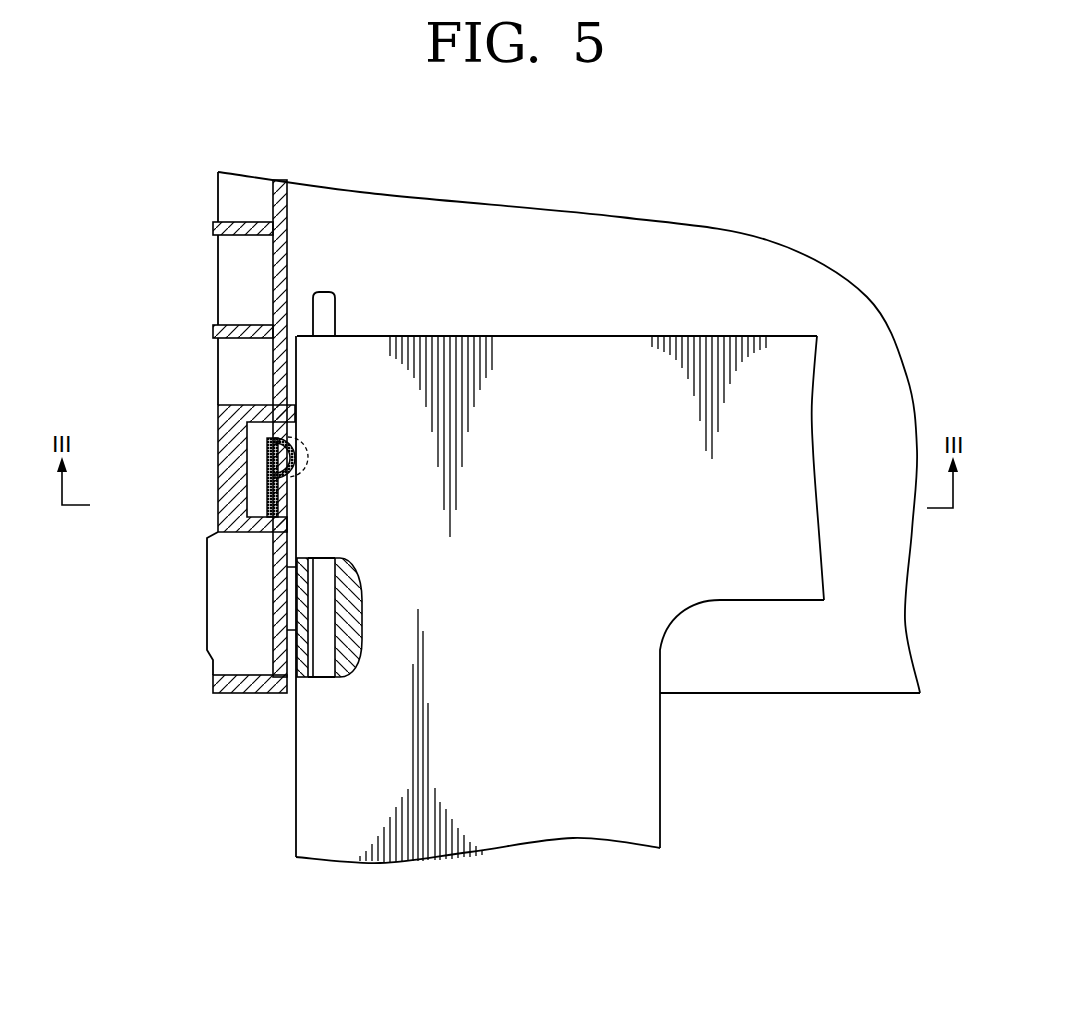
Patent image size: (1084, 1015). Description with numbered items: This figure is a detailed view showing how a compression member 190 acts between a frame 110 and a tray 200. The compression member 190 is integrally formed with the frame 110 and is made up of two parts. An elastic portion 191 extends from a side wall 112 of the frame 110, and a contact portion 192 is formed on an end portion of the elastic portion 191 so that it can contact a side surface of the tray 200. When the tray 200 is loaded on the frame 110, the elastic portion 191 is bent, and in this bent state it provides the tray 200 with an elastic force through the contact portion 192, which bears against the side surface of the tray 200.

The frame 110 is at (213, 625).
The side wall 112 is at (282, 553).
The compression member 190 is at (253, 488).
The elastic portion 191 is at (272, 494).
The contact portion 192 is at (293, 464).
The tray 200 is at (285, 799).